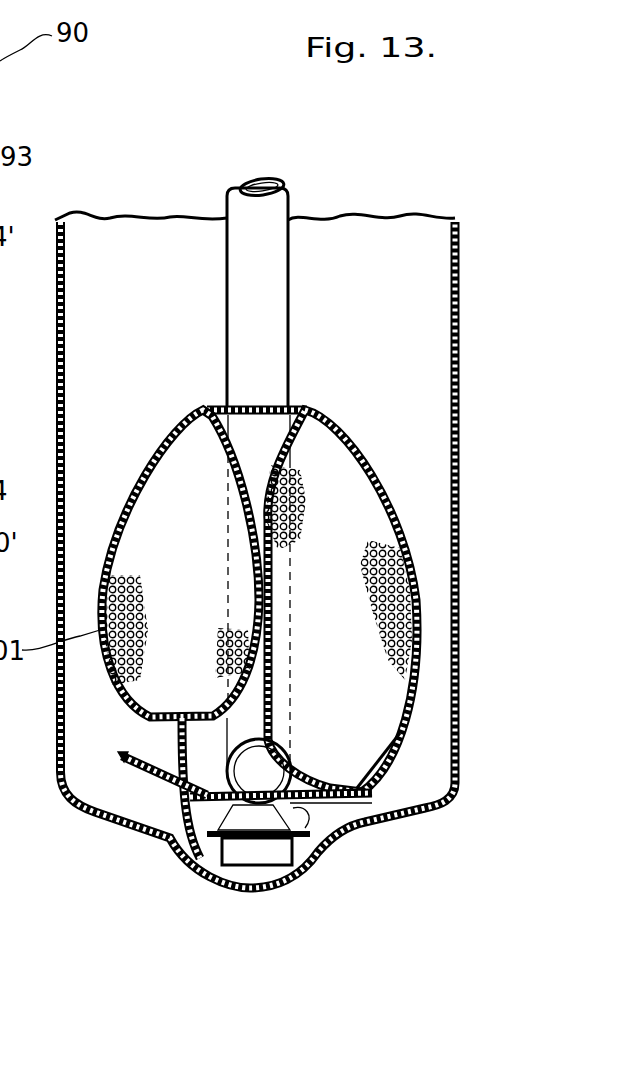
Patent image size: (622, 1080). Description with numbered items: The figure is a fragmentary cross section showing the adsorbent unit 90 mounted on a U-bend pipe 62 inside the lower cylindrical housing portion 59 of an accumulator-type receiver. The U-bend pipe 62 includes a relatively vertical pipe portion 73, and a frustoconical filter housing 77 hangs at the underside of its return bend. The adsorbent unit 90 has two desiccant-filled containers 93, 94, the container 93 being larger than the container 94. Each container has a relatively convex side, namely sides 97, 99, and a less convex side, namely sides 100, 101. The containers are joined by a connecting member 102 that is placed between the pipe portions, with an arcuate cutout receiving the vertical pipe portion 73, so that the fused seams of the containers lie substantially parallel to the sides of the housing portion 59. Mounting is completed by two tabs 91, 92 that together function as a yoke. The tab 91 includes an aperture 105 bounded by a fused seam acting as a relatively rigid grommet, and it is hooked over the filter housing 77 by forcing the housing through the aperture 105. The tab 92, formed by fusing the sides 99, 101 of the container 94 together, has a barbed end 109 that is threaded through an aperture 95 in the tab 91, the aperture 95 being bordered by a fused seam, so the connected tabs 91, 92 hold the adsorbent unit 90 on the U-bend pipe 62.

The lower cylindrical housing portion 59 is at (459, 317).
The U-bend pipe 62 is at (290, 205).
The vertical pipe portion 73 is at (226, 318).
The frustoconical filter housing 77 is at (310, 863).
The adsorbent unit 90 is at (358, 410).
The tab 91 is at (122, 768).
The tab 92 is at (167, 812).
The container 93 is at (385, 505).
The container 94 is at (156, 480).
The aperture 95 is at (197, 790).
The convex side 97 is at (265, 617).
The convex side 99 is at (255, 568).
The side 100 is at (400, 552).
The side 101 is at (126, 630).
The connecting member 102 is at (245, 406).
The aperture 105 is at (310, 838).
The barbed end 109 is at (175, 848).